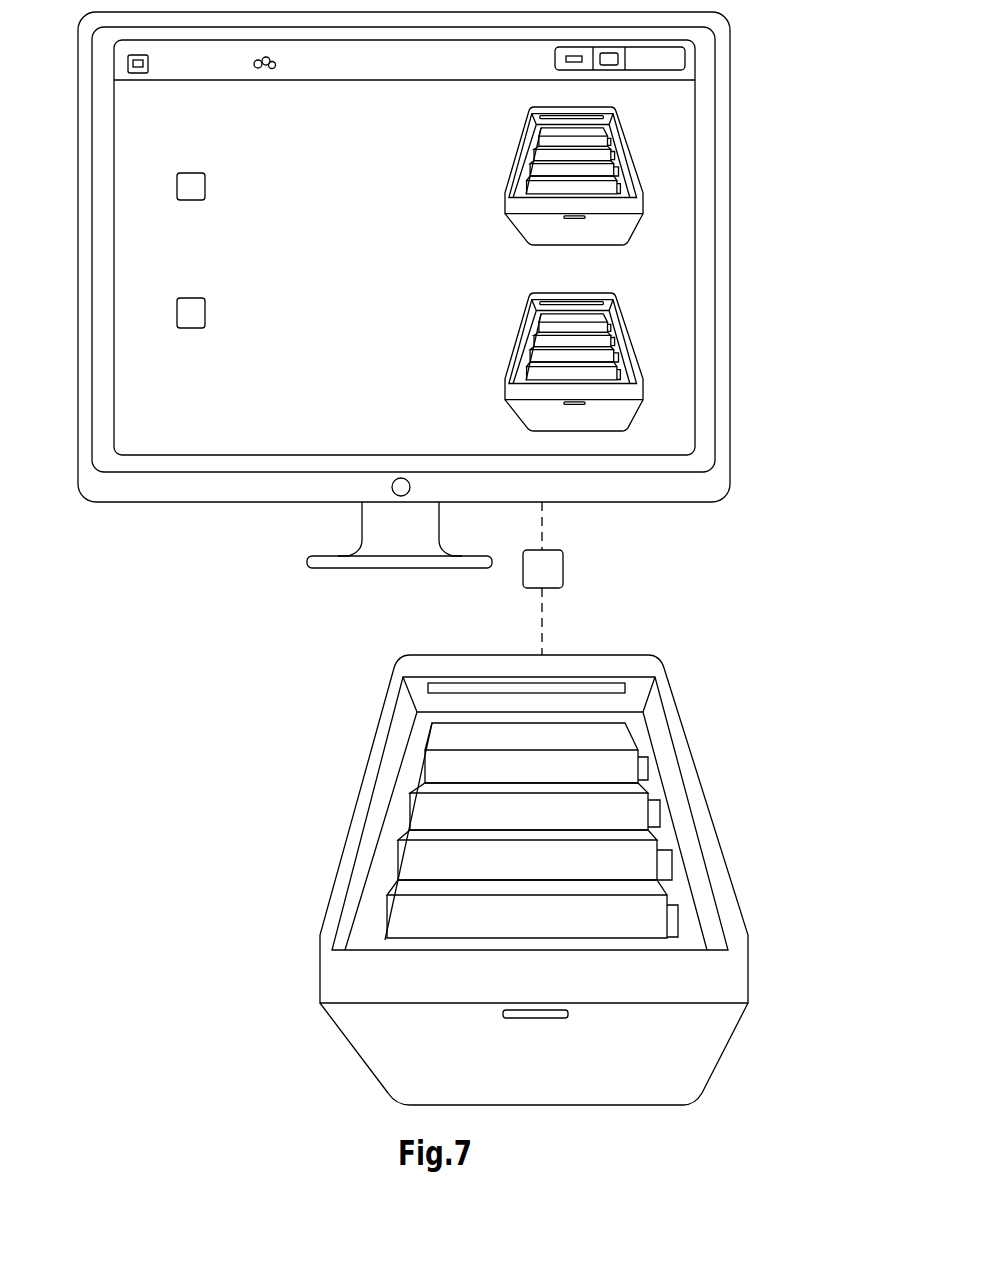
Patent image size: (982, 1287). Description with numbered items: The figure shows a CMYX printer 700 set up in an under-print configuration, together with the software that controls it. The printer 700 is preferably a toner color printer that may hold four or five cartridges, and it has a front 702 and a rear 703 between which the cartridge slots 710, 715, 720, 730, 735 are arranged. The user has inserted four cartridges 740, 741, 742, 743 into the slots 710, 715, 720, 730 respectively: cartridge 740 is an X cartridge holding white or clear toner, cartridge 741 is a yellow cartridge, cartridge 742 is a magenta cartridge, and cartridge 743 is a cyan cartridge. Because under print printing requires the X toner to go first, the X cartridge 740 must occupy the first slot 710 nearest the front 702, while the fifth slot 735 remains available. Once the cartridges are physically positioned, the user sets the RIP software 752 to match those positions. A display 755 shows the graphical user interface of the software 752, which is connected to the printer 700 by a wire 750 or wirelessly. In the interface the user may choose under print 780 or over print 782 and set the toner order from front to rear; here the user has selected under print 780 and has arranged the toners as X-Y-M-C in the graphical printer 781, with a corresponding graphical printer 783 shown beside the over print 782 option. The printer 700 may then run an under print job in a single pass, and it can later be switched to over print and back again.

The CMYX printer 700 is at (524, 863).
The front 702 is at (683, 1060).
The rear 703 is at (657, 656).
The first cartridge slot 710 is at (537, 889).
The cartridge slot 715 is at (536, 825).
The cartridge slot 720 is at (537, 774).
The cartridge slot 730 is at (540, 727).
The cartridge slot 735 is at (628, 737).
The X cartridge 740 is at (415, 910).
The yellow cartridge 741 is at (485, 860).
The magenta cartridge 742 is at (473, 803).
The cyan cartridge 743 is at (490, 757).
The wire 750 is at (542, 627).
The RIP software 752 is at (563, 565).
The display 755 is at (412, 290).
The under print selection 780 is at (168, 189).
The graphical printer 781 is at (645, 142).
The over print selection 782 is at (168, 315).
The graphical printer for over print 783 is at (645, 325).